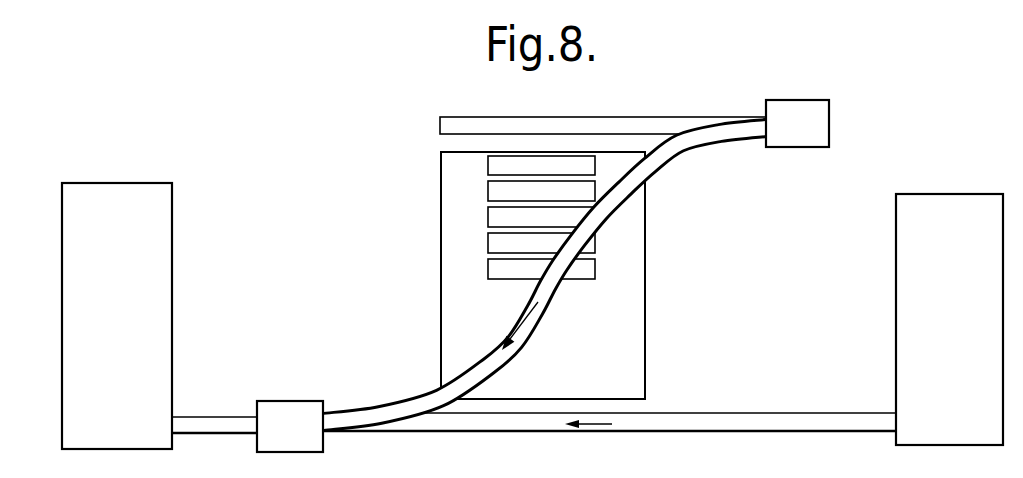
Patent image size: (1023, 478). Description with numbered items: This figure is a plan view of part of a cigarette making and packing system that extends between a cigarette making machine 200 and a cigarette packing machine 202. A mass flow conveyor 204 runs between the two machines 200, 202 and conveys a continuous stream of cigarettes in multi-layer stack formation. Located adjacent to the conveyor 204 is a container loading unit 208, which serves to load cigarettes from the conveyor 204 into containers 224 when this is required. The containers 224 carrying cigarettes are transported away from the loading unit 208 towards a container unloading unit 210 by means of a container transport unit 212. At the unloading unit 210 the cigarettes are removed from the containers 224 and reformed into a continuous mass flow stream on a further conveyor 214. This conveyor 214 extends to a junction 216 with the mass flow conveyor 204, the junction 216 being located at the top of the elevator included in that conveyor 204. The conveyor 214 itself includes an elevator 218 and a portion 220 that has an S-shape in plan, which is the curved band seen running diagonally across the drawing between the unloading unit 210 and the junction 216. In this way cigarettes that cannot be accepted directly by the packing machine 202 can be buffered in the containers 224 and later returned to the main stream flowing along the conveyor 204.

The cigarette making machine 200 is at (972, 327).
The cigarette packing machine 202 is at (142, 333).
The mass flow conveyor 204 is at (833, 418).
The container loading unit 208 is at (656, 391).
The container unloading unit 210 is at (564, 228).
The container transport unit 212 is at (546, 275).
The conveyor 214 is at (640, 120).
The junction 216 is at (292, 410).
The elevator 218 is at (823, 125).
The S-shaped portion 220 is at (487, 348).
The containers 224 is at (490, 214).